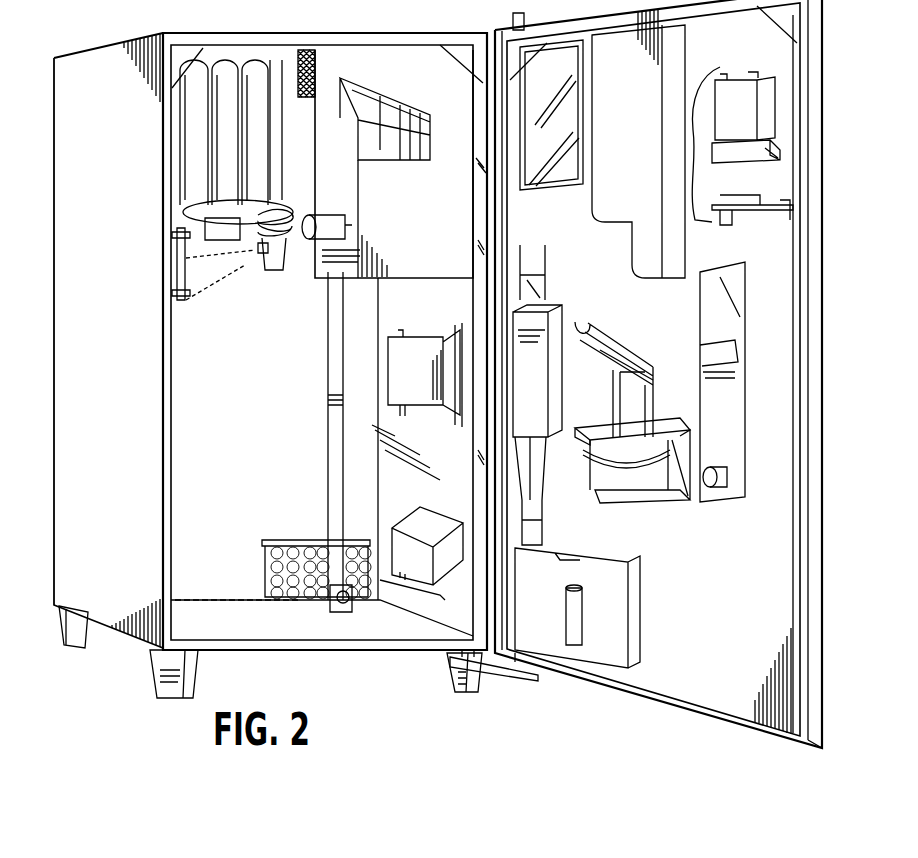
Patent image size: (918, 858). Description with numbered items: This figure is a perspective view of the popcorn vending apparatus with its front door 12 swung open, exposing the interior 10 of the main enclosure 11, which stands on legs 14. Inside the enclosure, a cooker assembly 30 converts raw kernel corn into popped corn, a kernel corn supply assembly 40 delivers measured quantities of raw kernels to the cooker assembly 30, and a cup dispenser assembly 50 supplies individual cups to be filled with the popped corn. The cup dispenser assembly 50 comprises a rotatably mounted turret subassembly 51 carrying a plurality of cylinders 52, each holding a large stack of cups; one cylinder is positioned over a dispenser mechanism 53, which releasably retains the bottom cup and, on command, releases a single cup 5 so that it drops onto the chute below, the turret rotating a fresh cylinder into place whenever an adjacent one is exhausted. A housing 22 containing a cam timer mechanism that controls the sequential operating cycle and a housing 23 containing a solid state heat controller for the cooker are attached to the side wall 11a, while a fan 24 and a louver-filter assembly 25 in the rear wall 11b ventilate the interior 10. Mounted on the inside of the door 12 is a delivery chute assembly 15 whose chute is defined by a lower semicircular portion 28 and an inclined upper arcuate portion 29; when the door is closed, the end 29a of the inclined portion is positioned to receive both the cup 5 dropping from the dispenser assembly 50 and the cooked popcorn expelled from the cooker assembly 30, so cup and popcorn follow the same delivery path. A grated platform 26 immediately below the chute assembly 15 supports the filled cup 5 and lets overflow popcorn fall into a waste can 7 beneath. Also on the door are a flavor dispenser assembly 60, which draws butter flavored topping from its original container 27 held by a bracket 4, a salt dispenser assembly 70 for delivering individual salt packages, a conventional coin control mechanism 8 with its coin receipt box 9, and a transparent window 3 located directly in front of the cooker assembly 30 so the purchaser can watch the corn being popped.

The transparent window 3 is at (566, 118).
The bracket 4 is at (773, 147).
The cup 5 is at (275, 265).
The waste can 7 is at (640, 480).
The coin control mechanism 8 is at (540, 418).
The coin receipt box 9 is at (545, 615).
The interior 10 is at (230, 378).
The main enclosure 11 is at (115, 236).
The side wall 11a is at (448, 312).
The rear wall 11b is at (225, 491).
The front door 12 is at (822, 2).
The legs 14 is at (72, 635).
The delivery chute assembly 15 is at (647, 350).
The housing 22 is at (422, 522).
The housing 23 is at (428, 377).
The fan 24 is at (308, 55).
The louver-filter assembly 25 is at (273, 545).
The platform 26 is at (596, 418).
The container 27 is at (748, 120).
The lower semicircular portion 28 is at (633, 397).
The inclined upper arcuate portion 29 is at (598, 348).
The end 29a is at (563, 312).
The cooker assembly 30 is at (440, 217).
The kernel corn supply assembly 40 is at (333, 343).
The cup dispenser assembly 50 is at (278, 362).
The turret subassembly 51 is at (240, 220).
The cylinders 52 is at (250, 140).
The dispenser mechanism 53 is at (262, 240).
The flavor dispenser assembly 60 is at (770, 190).
The salt dispenser assembly 70 is at (790, 370).